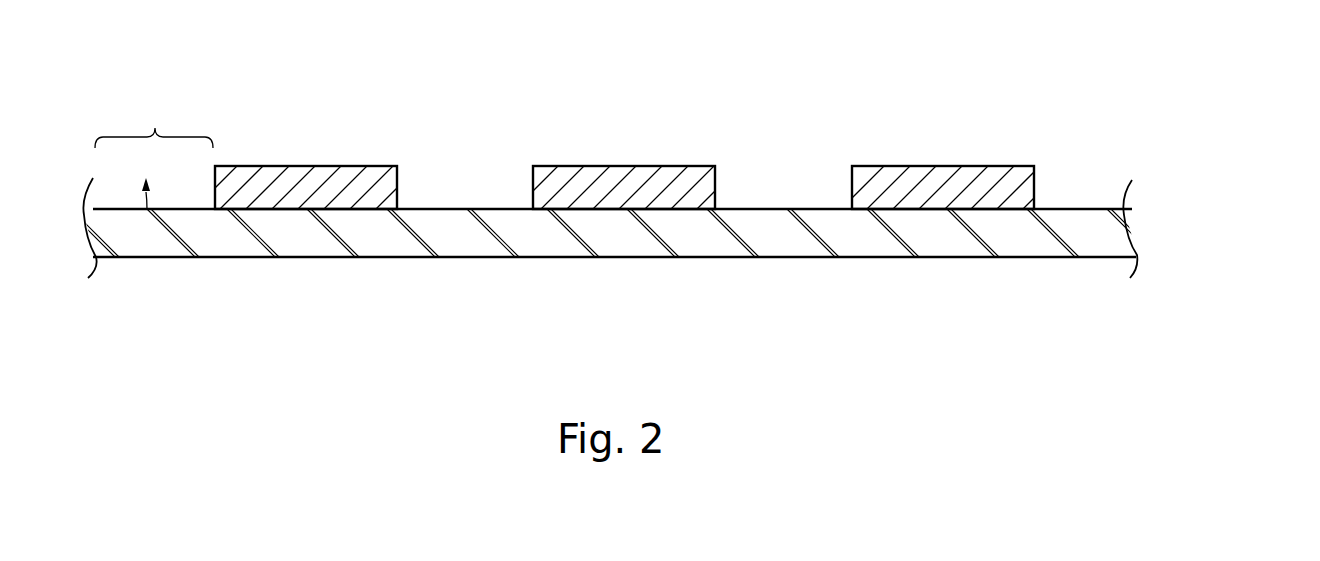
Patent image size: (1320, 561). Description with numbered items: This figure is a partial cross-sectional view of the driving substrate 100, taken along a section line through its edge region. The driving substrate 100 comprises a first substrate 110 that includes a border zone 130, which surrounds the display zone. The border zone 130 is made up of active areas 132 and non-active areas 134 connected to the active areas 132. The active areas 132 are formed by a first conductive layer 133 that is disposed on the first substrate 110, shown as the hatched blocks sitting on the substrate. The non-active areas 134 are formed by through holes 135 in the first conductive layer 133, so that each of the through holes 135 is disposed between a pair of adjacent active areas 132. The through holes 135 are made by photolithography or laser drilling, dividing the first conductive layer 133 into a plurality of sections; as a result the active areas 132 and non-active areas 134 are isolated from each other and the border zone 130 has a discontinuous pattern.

The driving substrate 100 is at (689, 184).
The first substrate 110 is at (1112, 234).
The border zone 130 is at (669, 218).
The active areas 132 is at (307, 216).
The first conductive layer 133 is at (358, 197).
The non-active areas 134 is at (154, 121).
The through holes 135 is at (147, 209).